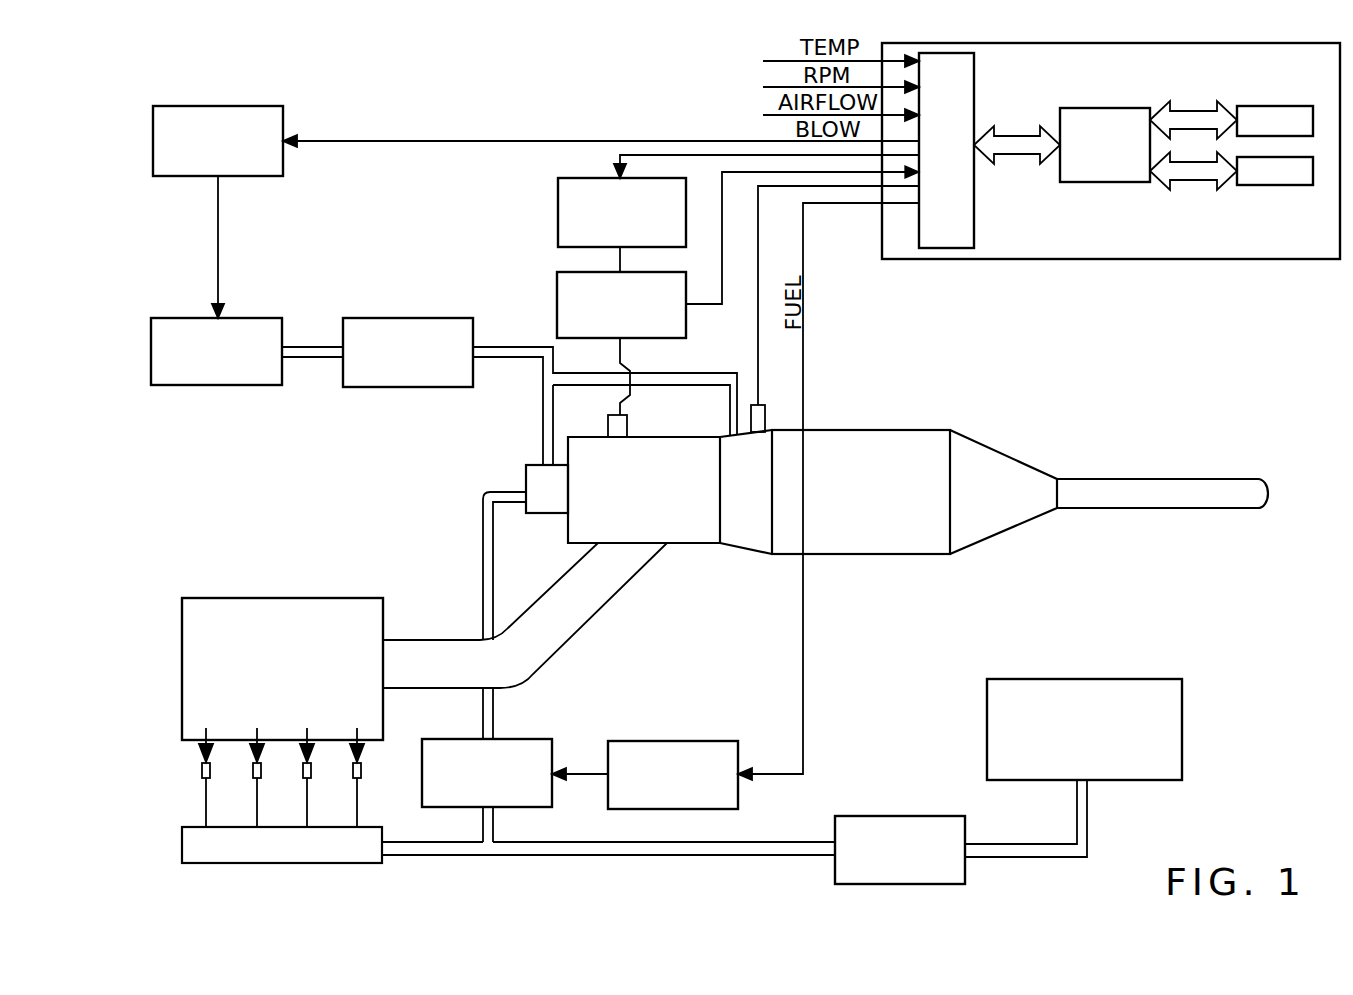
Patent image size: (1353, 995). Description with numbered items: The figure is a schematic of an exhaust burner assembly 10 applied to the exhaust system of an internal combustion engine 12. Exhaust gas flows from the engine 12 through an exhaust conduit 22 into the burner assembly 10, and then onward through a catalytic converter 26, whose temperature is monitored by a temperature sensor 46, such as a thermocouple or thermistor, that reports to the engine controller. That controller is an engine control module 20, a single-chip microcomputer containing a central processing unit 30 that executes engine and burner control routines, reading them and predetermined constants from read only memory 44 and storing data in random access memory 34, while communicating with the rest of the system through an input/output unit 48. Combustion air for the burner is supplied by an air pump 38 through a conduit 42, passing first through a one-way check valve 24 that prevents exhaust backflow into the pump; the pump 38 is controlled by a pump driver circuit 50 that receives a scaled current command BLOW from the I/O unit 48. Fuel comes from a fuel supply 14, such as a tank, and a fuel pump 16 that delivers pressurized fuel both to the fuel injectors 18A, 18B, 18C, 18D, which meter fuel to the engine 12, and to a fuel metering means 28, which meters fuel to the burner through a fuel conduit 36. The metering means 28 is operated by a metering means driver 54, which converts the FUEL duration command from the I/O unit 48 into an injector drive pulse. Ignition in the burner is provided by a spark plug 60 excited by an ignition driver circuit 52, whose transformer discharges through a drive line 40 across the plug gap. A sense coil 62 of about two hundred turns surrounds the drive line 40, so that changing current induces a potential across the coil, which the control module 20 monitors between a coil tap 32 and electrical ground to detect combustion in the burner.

The exhaust burner assembly 10 is at (686, 560).
The internal combustion engine 12 is at (240, 580).
The fuel supply 14 is at (1172, 710).
The fuel pump 16 is at (938, 823).
The fuel injector 18A is at (203, 770).
The fuel injector 18B is at (253, 772).
The fuel injector 18C is at (303, 772).
The fuel injector 18D is at (353, 775).
The engine control module 20 is at (1226, 268).
The exhaust conduit 22 is at (557, 625).
The check valve 24 is at (360, 380).
The catalytic converter 26 is at (875, 540).
The fuel metering means 28 is at (532, 797).
The central processing unit 30 is at (1103, 108).
The coil tap 32 is at (707, 305).
The random access memory 34 is at (1283, 106).
The fuel conduit 36 is at (484, 710).
The air pump 38 is at (160, 348).
The spark plug drive line 40 is at (618, 260).
The air conduit 42 is at (543, 450).
The read only memory 44 is at (1290, 185).
The temperature sensor 46 is at (766, 418).
The input/output unit 48 is at (977, 220).
The pump driver circuit 50 is at (163, 137).
The ignition driver circuit 52 is at (563, 218).
The metering means driver 54 is at (688, 750).
The spark plug 60 is at (627, 425).
The sense coil 62 is at (568, 305).